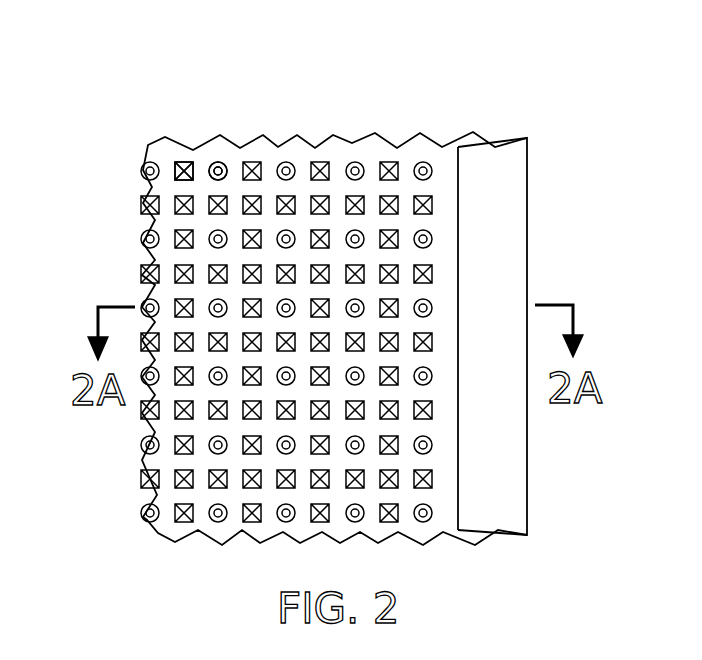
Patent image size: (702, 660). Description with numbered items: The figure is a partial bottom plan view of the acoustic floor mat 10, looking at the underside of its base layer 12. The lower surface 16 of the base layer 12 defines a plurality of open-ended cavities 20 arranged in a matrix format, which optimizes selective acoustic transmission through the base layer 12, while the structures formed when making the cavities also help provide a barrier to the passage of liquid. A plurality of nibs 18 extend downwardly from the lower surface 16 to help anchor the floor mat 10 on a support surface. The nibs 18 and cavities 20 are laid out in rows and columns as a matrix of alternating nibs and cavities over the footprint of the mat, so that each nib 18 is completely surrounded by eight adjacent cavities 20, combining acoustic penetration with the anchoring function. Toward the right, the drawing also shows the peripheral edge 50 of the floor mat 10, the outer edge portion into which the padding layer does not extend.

The floor mat 10 is at (130, 532).
The base layer 12 is at (303, 152).
The lower surface 16 is at (427, 145).
The nib 18 is at (218, 158).
The open-ended cavity 20 is at (179, 158).
The peripheral edge 50 is at (502, 125).